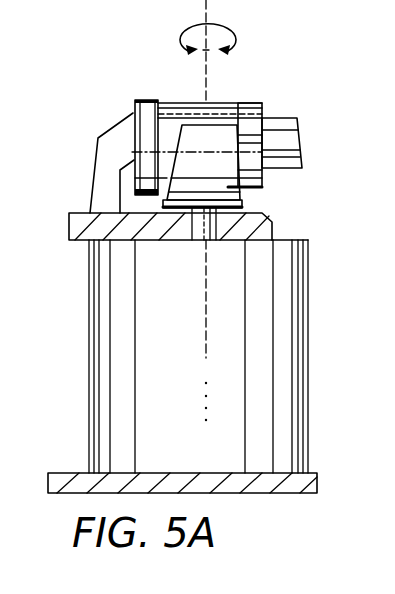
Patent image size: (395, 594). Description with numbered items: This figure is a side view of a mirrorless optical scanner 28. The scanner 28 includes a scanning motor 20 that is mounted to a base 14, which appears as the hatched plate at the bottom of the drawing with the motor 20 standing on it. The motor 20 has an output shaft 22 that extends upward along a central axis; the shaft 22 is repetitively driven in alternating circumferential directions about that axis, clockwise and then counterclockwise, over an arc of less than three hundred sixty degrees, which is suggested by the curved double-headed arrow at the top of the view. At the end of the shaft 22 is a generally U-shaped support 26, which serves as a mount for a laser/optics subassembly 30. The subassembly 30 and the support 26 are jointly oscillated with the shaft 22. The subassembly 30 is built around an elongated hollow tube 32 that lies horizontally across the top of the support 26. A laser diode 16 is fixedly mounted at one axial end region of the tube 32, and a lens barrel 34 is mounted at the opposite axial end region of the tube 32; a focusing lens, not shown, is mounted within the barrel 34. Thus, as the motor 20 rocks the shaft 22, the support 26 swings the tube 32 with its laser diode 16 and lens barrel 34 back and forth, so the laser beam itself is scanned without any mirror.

The base 14 is at (54, 485).
The laser diode 16 is at (137, 152).
The scanning motor 20 is at (115, 401).
The output shaft 22 is at (203, 243).
The U-shaped support 26 is at (237, 192).
The mirrorless optical scanner 28 is at (254, 97).
The laser/optics subassembly 30 is at (178, 106).
The elongated hollow tube 32 is at (140, 101).
The lens barrel 34 is at (285, 120).